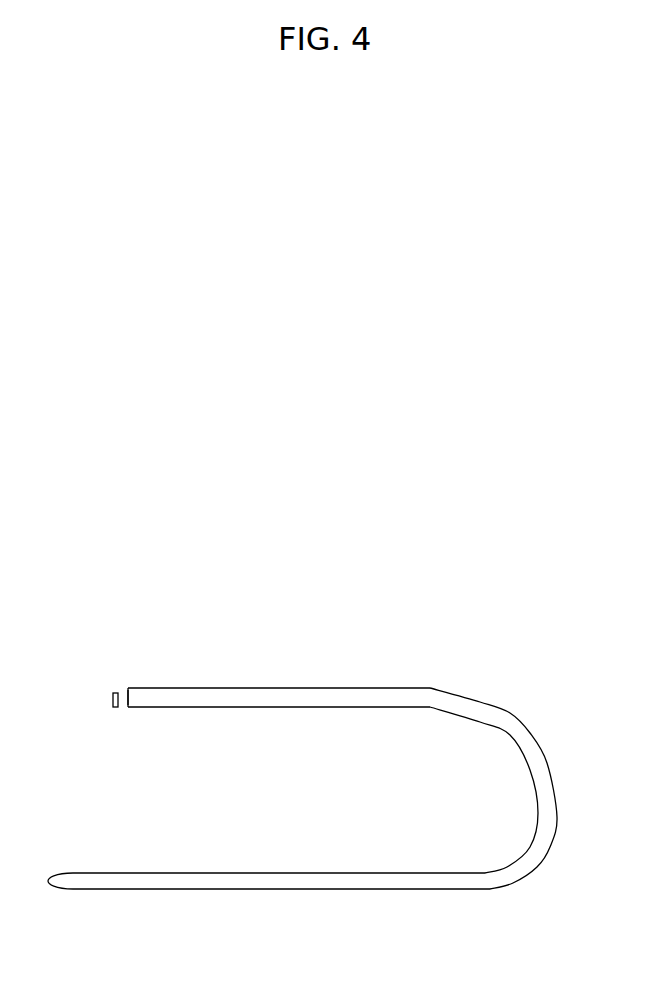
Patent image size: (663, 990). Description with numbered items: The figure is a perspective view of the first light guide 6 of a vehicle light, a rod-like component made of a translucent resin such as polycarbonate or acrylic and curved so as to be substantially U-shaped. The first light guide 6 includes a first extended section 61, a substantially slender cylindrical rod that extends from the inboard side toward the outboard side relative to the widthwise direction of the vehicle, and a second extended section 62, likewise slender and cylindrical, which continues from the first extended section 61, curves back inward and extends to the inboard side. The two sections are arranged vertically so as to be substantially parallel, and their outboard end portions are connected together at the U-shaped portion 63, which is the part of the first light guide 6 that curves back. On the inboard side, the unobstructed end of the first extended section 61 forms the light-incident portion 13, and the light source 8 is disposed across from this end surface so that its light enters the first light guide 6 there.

The first light guide 6 is at (518, 613).
The first extended section 61 is at (270, 697).
The second extended section 62 is at (355, 880).
The U-shaped portion 63 is at (502, 722).
The light-incident portion 13 is at (128, 692).
The light source 8 is at (112, 700).